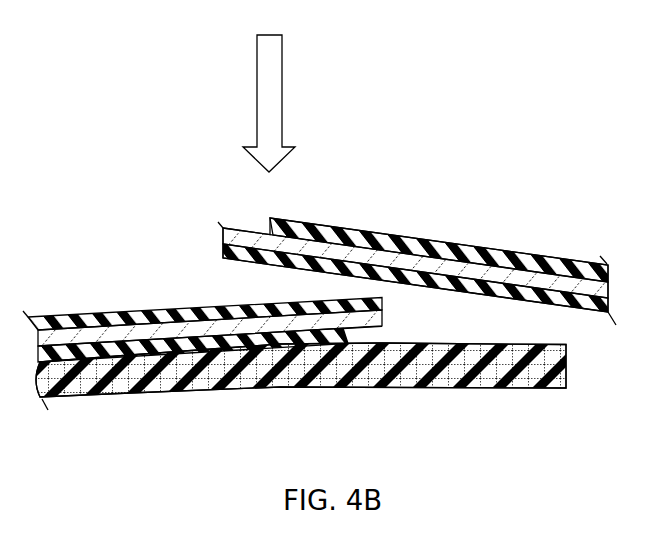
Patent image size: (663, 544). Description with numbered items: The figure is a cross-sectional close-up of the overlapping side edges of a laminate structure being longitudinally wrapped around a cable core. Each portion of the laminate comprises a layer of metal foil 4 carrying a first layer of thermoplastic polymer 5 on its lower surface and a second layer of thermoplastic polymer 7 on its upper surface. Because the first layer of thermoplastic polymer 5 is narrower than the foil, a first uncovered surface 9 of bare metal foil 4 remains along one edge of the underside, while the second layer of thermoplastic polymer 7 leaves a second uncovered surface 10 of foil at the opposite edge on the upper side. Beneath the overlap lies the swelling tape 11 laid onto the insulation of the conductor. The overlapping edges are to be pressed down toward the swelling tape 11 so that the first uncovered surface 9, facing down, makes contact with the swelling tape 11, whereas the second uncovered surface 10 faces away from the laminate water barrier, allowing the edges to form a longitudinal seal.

The layer of metal foil 4 is at (453, 265).
The first layer of thermoplastic polymer 5 is at (493, 284).
The second layer of thermoplastic polymer 7 is at (425, 247).
The first uncovered surface 9 is at (376, 334).
The second uncovered surface 10 is at (253, 230).
The swelling tape 11 is at (455, 388).